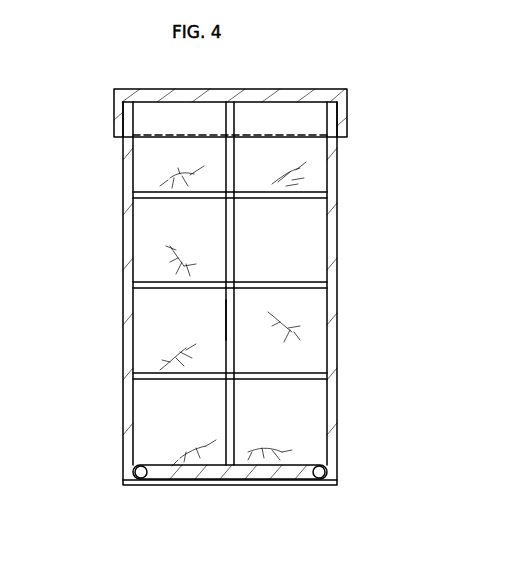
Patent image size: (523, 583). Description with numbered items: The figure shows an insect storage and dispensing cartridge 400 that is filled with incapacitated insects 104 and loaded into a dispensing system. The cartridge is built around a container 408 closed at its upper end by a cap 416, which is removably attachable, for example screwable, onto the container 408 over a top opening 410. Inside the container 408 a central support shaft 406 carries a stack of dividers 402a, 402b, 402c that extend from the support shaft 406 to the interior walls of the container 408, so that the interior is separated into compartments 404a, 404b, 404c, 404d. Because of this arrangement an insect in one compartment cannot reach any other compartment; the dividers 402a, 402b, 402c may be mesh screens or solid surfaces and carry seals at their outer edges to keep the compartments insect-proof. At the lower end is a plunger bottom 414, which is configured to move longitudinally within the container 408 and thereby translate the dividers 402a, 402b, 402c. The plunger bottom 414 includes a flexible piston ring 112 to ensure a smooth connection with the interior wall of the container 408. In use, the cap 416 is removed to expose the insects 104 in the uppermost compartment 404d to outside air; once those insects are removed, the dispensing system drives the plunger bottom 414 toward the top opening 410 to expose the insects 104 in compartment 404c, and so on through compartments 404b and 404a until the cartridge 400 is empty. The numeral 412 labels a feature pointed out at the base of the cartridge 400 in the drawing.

The insect storage and dispensing cartridge 400 is at (310, 68).
The top opening 410 is at (160, 80).
The cap 416 is at (114, 112).
The container 408 is at (127, 248).
The flexible piston ring 112 is at (124, 474).
The divider 402a is at (150, 373).
The divider 402b is at (150, 282).
The divider 402c is at (150, 192).
The support shaft 406 is at (225, 321).
The compartment 404a is at (315, 423).
The compartment 404b is at (315, 333).
The compartment 404c is at (315, 241).
The compartment 404d is at (315, 153).
The plunger bottom 414 is at (176, 474).
The rollers 412 is at (290, 490).
The insects 104 is at (166, 172).